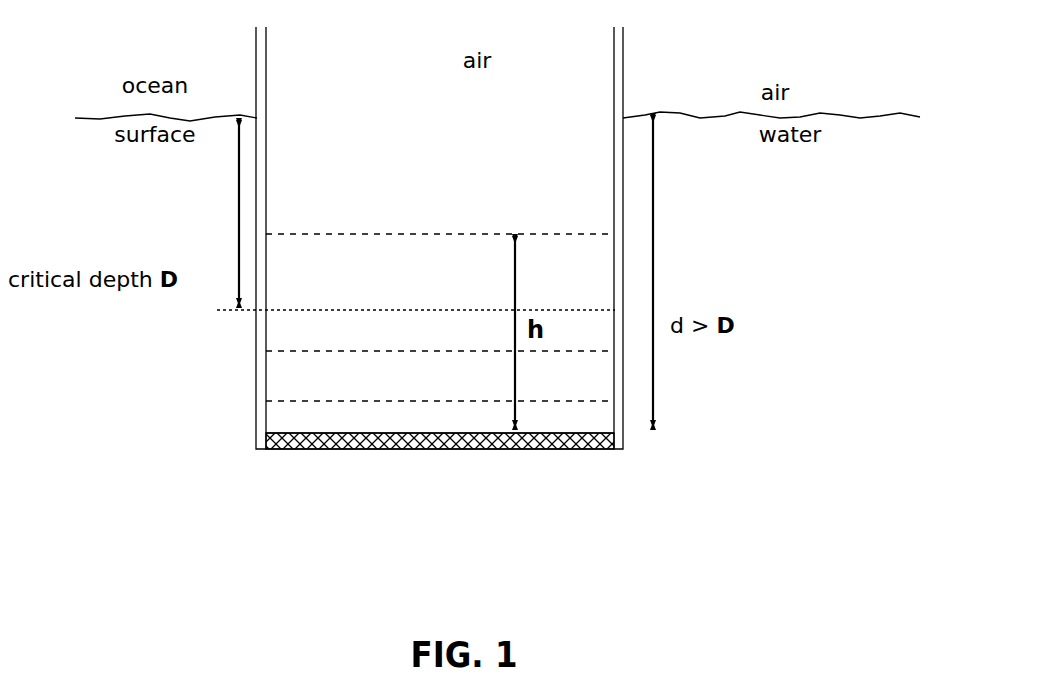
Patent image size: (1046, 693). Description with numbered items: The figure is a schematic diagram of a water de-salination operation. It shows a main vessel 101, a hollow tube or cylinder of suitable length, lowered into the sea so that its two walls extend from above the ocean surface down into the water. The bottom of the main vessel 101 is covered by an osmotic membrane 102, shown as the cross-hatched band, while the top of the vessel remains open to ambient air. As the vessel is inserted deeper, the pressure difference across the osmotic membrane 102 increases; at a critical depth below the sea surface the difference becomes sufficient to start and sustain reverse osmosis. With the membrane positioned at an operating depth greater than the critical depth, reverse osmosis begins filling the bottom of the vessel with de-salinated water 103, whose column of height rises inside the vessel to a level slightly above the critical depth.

The main vessel 101 is at (628, 31).
The osmotic membrane 102 is at (330, 453).
The de-salinated water 103 is at (360, 226).